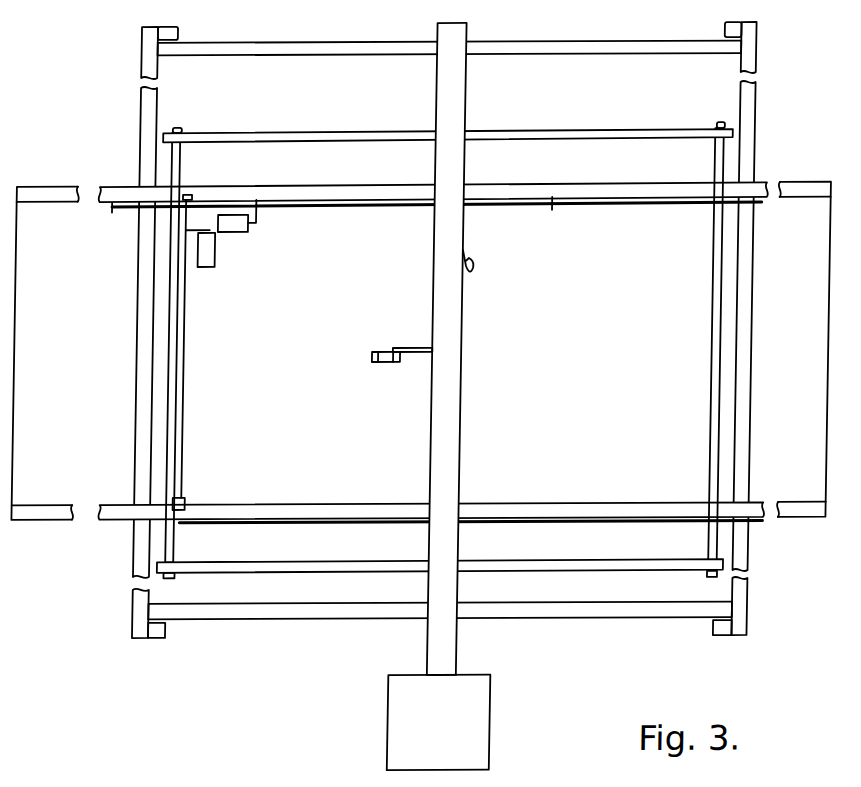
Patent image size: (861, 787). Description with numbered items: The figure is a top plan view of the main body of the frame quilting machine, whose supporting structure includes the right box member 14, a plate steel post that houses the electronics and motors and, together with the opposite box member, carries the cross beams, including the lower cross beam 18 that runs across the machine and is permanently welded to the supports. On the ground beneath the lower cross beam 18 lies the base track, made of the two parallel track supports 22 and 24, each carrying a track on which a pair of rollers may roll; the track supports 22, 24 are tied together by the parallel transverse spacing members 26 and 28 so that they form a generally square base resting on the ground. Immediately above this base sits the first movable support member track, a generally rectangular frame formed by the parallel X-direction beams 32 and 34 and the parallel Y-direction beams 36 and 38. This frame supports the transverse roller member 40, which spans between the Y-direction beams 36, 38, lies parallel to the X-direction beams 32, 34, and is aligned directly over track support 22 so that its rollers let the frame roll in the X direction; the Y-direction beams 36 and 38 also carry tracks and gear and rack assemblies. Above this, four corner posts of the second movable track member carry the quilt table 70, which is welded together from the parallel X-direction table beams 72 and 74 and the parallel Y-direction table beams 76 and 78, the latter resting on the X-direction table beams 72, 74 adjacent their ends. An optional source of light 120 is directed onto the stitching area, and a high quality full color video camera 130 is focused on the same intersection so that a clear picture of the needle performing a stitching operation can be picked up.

The right box member 14 is at (459, 728).
The lower cross beam 18 is at (457, 432).
The track support 22 is at (150, 314).
The track support 24 is at (758, 350).
The transverse spacing member 26 is at (687, 618).
The transverse spacing member 28 is at (589, 46).
The X-direction beam 32 is at (23, 430).
The X-direction beam 34 is at (829, 423).
The Y-direction beam 36 is at (586, 189).
The Y-direction beam 38 is at (606, 508).
The transverse roller member 40 is at (190, 483).
The quilt table 70 is at (447, 381).
The X-direction table beam 72 is at (177, 421).
The X-direction table beam 74 is at (723, 491).
The Y-direction table beam 76 is at (540, 135).
The Y-direction table beam 78 is at (570, 579).
The source of light 120 is at (482, 264).
The video camera 130 is at (394, 364).